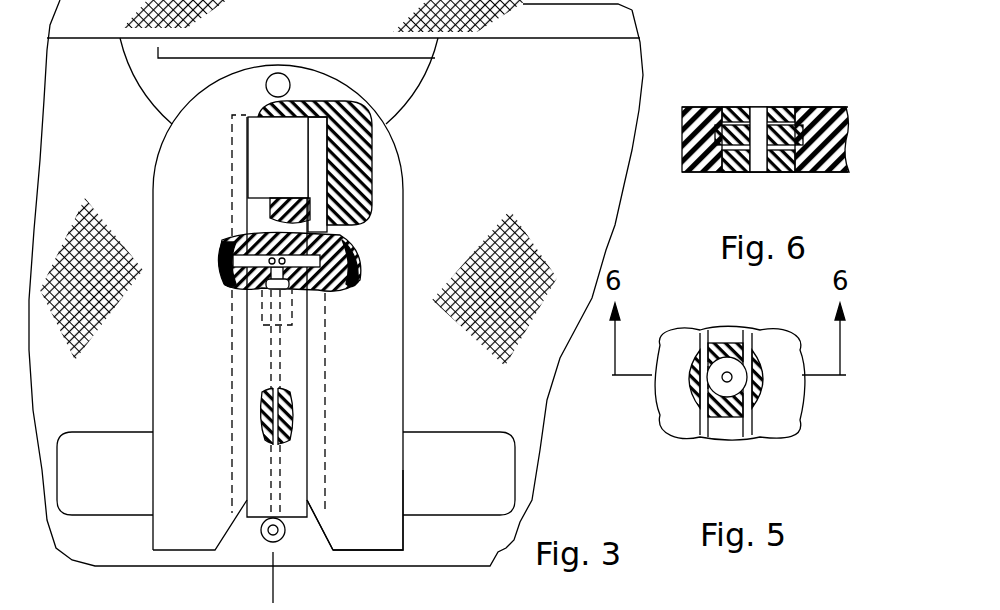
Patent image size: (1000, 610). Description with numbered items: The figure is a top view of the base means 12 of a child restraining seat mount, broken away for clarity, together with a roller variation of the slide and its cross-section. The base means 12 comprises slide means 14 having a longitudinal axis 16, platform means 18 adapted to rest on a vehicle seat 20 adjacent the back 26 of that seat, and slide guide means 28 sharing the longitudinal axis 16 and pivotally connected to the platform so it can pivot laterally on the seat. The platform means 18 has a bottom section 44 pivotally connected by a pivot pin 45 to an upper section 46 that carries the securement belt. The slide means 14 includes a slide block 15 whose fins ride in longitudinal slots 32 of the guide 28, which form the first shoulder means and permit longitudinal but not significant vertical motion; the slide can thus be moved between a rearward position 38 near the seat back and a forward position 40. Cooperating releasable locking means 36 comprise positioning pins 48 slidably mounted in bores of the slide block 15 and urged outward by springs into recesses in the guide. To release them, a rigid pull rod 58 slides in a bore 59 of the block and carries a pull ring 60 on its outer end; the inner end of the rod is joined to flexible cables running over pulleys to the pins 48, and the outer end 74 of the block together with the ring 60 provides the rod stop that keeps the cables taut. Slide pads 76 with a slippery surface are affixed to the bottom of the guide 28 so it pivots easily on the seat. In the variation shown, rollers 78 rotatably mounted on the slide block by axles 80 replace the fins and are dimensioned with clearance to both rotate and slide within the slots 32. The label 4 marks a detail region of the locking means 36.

In FIG. 3, the fastener detail 4 is at (222, 240).
In FIG. 3, the base means 12 is at (417, 165).
In FIG. 3, the slide means 14 is at (258, 352).
In FIG. 5, the slide means 14 is at (727, 425).
In FIG. 6, the slide means 14 is at (740, 162).
In FIG. 3, the slide block 15 is at (300, 200).
In FIG. 3, the longitudinal axis 16 is at (276, 583).
In FIG. 3, the platform means 18 is at (427, 90).
In FIG. 3, the vehicle seat 20 is at (583, 247).
In FIG. 3, the back of vehicle seat 26 is at (598, 25).
In FIG. 3, the slide guide means 28 is at (376, 417).
In FIG. 5, the slide guide means 28 is at (665, 345).
In FIG. 6, the slide guide means 28 is at (705, 108).
In FIG. 3, the first shoulder means (slots) 32 is at (320, 182).
In FIG. 5, the first shoulder means (slots) 32 is at (705, 400).
In FIG. 3, the releasable locking means 36 is at (238, 290).
In FIG. 3, the rearward position 38 is at (383, 200).
In FIG. 3, the forward position 40 is at (376, 500).
In FIG. 3, the bottom section 44 is at (138, 60).
In FIG. 3, the pivot pin 45 is at (278, 85).
In FIG. 3, the upper section 46 is at (138, 83).
In FIG. 3, the positioning pins 48 is at (226, 276).
In FIG. 3, the pull rod 58 is at (258, 400).
In FIG. 3, the bore 59 is at (265, 445).
In FIG. 3, the pull ring 60 is at (265, 541).
In FIG. 3, the outer end of block 74 is at (285, 533).
In FIG. 3, the slide pads 76 is at (487, 433).
In FIG. 5, the rollers 78 is at (722, 358).
In FIG. 6, the rollers 78 is at (742, 123).
In FIG. 5, the axles 80 is at (731, 373).
In FIG. 6, the axles 80 is at (760, 113).